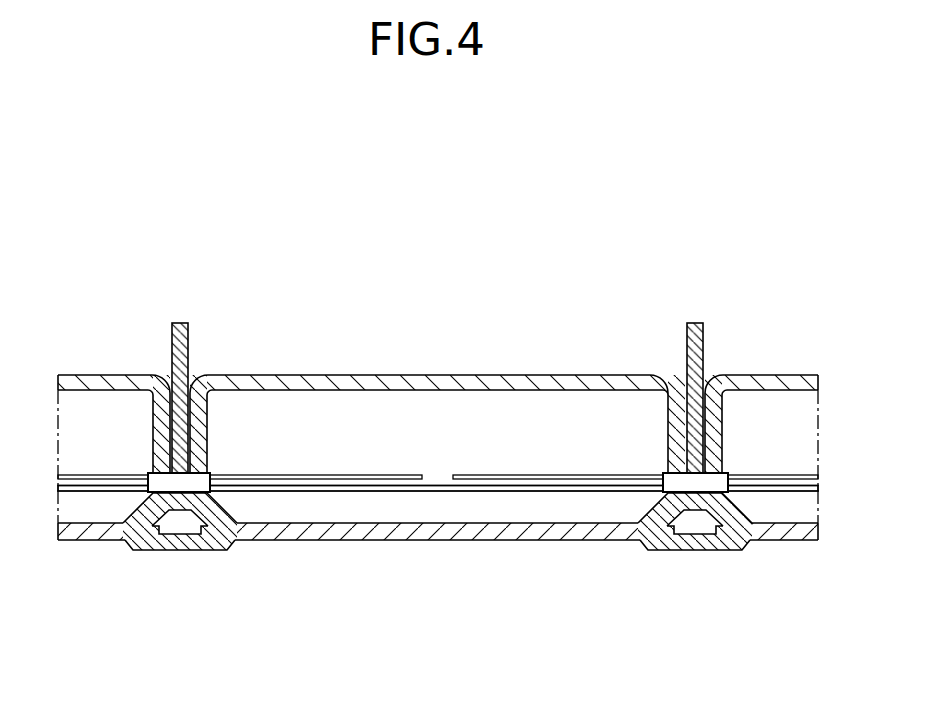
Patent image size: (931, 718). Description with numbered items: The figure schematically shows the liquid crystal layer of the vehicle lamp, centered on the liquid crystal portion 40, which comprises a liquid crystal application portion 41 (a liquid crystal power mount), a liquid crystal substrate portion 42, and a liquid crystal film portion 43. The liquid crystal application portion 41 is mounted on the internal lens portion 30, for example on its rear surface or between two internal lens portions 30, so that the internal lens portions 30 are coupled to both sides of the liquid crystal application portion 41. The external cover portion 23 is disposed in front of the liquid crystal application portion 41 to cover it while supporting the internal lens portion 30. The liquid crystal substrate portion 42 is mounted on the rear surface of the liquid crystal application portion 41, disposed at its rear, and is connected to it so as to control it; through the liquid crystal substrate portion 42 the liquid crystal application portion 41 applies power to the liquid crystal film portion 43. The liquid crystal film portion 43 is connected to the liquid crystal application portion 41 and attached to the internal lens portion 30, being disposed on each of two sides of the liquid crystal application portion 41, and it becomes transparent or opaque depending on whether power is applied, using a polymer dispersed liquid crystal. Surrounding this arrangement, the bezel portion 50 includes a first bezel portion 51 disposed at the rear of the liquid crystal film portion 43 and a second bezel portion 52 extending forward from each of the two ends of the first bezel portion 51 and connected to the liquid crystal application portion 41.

The external cover portion 23 is at (656, 548).
The internal lens portion 30 is at (293, 485).
The liquid crystal portion 40 is at (507, 500).
The liquid crystal application portion 41 is at (717, 485).
The liquid crystal substrate portion 42 is at (697, 405).
The liquid crystal film portion 43 is at (787, 477).
The bezel portion 50 is at (438, 332).
The first bezel portion 51 is at (268, 377).
The second bezel portion 52 is at (197, 442).